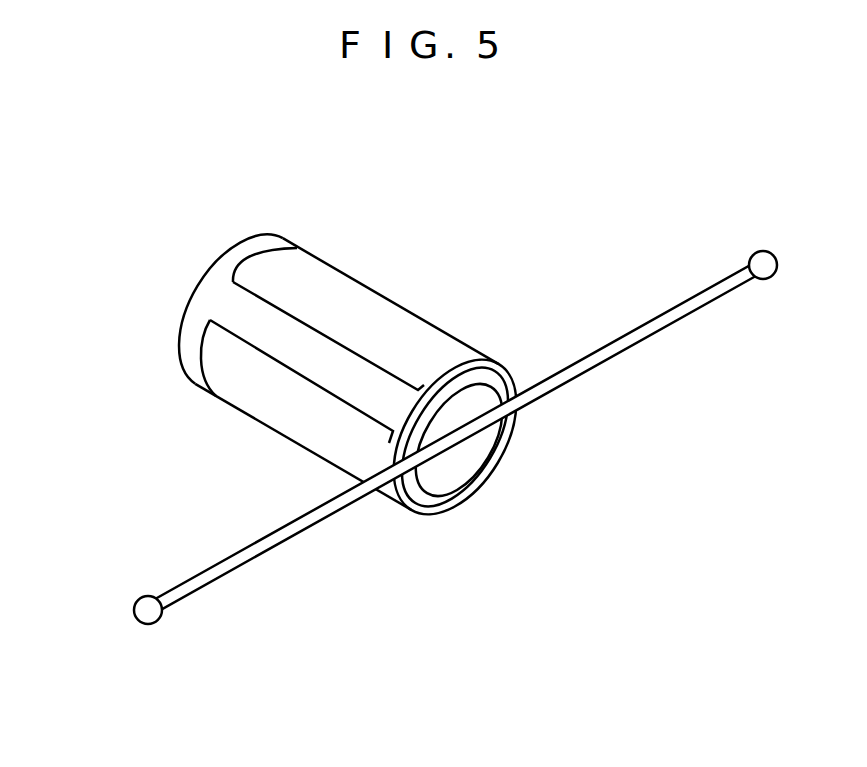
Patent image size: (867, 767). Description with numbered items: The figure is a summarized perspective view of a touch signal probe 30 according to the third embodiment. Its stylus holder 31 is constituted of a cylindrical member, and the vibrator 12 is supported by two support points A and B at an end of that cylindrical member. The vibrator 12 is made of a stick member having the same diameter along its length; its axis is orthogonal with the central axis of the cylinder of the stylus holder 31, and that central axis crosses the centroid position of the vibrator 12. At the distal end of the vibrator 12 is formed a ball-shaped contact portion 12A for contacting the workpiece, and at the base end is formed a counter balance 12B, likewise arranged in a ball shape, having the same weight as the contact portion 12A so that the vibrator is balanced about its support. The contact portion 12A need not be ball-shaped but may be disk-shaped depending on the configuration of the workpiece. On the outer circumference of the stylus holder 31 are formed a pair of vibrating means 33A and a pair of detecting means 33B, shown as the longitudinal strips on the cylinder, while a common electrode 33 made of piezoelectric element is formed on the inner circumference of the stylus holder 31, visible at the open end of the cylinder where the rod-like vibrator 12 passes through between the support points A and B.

The touch signal probe 30 is at (93, 227).
The stylus holder 31 is at (238, 311).
The common electrode 33 is at (484, 403).
The vibrating means 33A is at (257, 393).
The detecting means 33B is at (298, 276).
The vibrator 12 is at (259, 554).
The contact portion 12A is at (150, 613).
The counter balance 12B is at (768, 262).
The support point A is at (412, 469).
The support point B is at (513, 412).